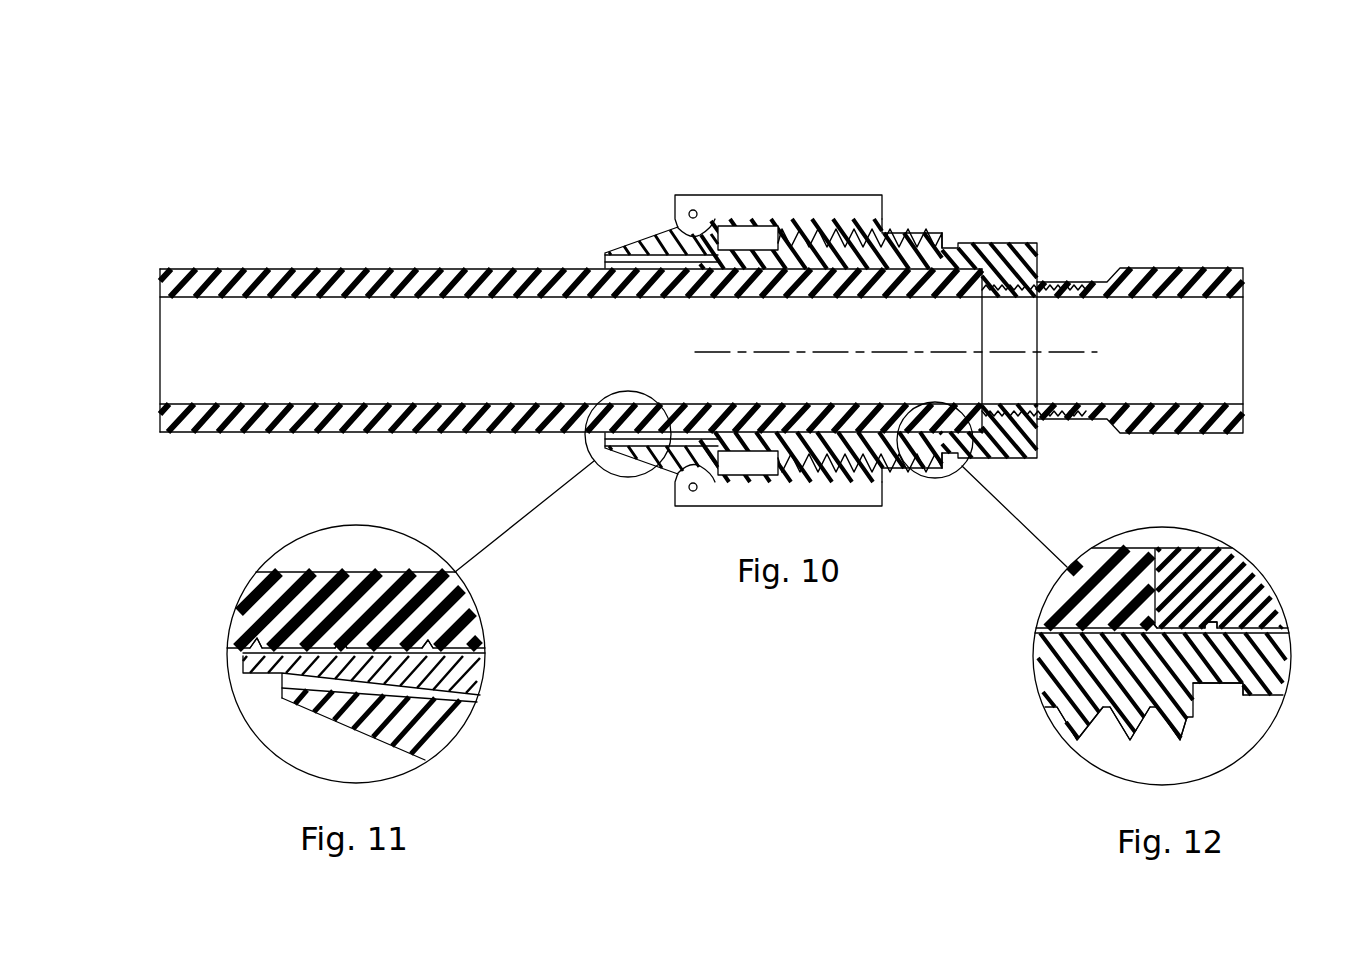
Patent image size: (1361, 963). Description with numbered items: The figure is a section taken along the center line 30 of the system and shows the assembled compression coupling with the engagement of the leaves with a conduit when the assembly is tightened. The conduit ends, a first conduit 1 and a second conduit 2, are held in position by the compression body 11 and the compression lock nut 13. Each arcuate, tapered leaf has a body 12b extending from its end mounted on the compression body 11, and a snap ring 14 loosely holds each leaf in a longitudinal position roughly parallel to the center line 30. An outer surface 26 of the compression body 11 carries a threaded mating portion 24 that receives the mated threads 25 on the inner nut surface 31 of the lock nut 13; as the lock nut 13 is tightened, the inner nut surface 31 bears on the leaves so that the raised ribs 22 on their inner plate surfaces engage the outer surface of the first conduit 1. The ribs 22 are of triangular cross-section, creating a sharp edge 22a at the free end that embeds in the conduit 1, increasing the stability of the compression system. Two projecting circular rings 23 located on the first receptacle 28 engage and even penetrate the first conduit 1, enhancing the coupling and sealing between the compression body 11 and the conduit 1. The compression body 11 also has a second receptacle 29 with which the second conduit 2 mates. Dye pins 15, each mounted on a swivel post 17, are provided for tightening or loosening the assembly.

In FIG. 10, the first conduit 1 is at (458, 268).
In FIG. 11, the first conduit 1 is at (305, 572).
In FIG. 12, the first conduit 1 is at (1183, 547).
In FIG. 10, the second conduit 2 is at (1013, 416).
In FIG. 10, the compression body 11 is at (1013, 257).
In FIG. 12, the compression body 11 is at (1243, 693).
In FIG. 10, the second end or body of leaf 12b is at (597, 268).
In FIG. 11, the second end or body of leaf 12b is at (477, 675).
In FIG. 10, the compression lock nut 13 is at (650, 236).
In FIG. 11, the compression lock nut 13 is at (317, 712).
In FIG. 10, the snap ring 14 is at (807, 230).
In FIG. 10, the dye pin 15 is at (693, 213).
In FIG. 10, the swivel post 17 is at (740, 197).
In FIG. 11, the raised rib 22 is at (350, 643).
In FIG. 11, the sharp edge 22a is at (255, 640).
In FIG. 12, the projecting circular ring 23 is at (1182, 580).
In FIG. 10, the mating portion 24 is at (938, 237).
In FIG. 12, the mating portion 24 is at (1117, 727).
In FIG. 10, the mated threads 25 is at (845, 220).
In FIG. 12, the outer surface of compression body 26 is at (1195, 695).
In FIG. 10, the first receptacle 28 is at (930, 247).
In FIG. 10, the second receptacle 29 is at (1010, 247).
In FIG. 10, the center line 30 is at (882, 353).
In FIG. 11, the inner nut surface 31 is at (487, 656).